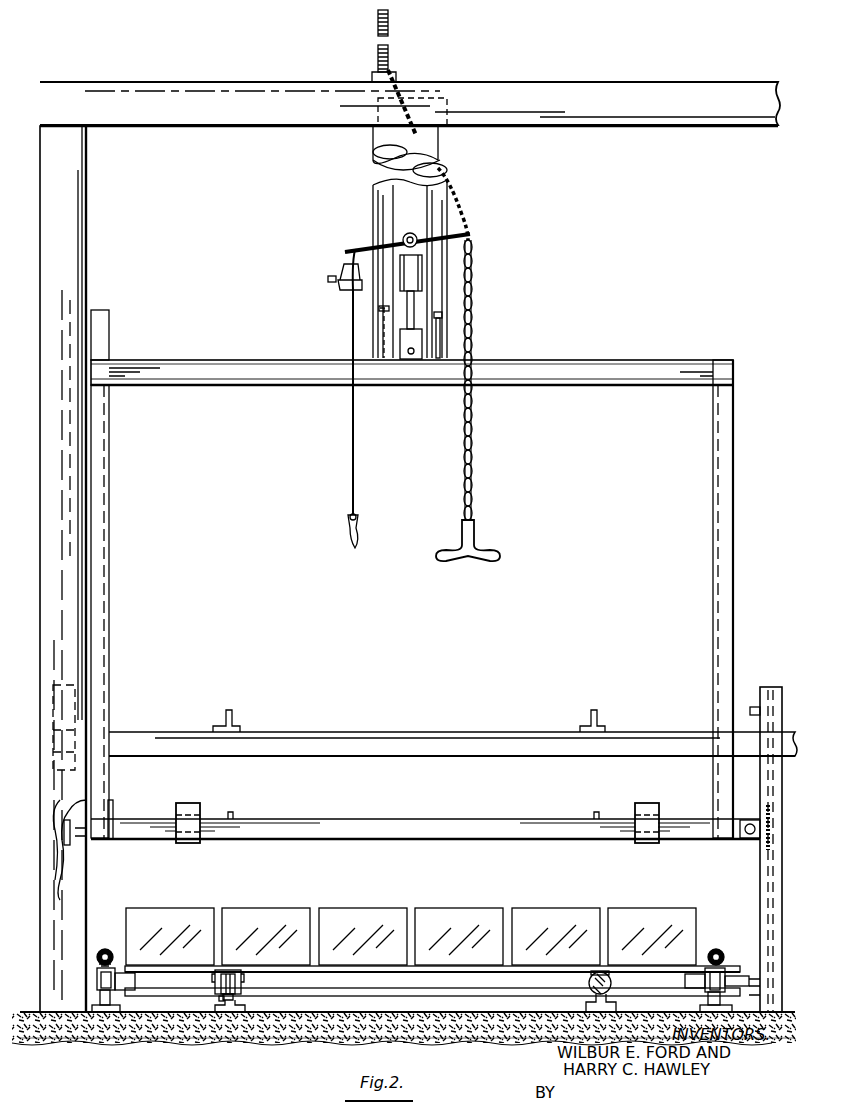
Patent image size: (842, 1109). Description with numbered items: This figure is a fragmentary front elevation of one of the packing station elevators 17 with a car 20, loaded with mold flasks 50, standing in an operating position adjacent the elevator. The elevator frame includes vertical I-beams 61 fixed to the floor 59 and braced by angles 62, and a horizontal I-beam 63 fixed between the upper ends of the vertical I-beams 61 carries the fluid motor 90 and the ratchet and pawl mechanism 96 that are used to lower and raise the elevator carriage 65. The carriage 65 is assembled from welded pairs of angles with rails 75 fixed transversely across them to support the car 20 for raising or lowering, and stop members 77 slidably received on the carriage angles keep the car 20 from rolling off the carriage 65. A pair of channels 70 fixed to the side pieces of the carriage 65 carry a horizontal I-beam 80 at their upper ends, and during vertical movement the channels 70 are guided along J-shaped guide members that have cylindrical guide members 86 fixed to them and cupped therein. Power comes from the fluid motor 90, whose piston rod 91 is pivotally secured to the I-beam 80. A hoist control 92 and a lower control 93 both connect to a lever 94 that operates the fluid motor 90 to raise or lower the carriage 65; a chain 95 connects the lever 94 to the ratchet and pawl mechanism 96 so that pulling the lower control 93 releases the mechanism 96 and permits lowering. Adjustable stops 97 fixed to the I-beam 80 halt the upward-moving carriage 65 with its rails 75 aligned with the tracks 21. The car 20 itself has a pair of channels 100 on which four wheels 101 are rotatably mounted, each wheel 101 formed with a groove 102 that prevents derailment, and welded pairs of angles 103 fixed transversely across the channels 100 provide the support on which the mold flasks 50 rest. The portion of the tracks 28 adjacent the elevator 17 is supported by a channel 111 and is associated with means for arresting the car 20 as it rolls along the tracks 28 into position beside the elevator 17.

The elevator 17 is at (718, 64).
The car 20 is at (112, 944).
The track 21 is at (233, 712).
The track 28 is at (226, 1008).
The mold flask 50 is at (238, 915).
The floor 59 is at (40, 1025).
The vertical I-beam 61 is at (80, 200).
The angle 62 is at (58, 683).
The horizontal I-beam 63 is at (160, 88).
The elevator carriage 65 is at (350, 812).
The channel 70 is at (108, 500).
The rail 75 is at (234, 812).
The stop member 77 is at (190, 802).
The horizontal I-beam 80 is at (585, 360).
The cylindrical guide member 86 is at (100, 330).
The fluid motor 90 is at (450, 171).
The piston rod 91 is at (414, 298).
The hoist control 92 is at (352, 546).
The lower control 93 is at (480, 530).
The lever 94 is at (428, 236).
The chain 95 is at (462, 214).
The ratchet and pawl mechanism 96 is at (392, 58).
The adjustable stop 97 is at (378, 334).
The channel 100 is at (245, 978).
The wheel 101 is at (235, 994).
The groove 102 is at (220, 998).
The angle 103 is at (136, 989).
The channel 111 is at (182, 1025).